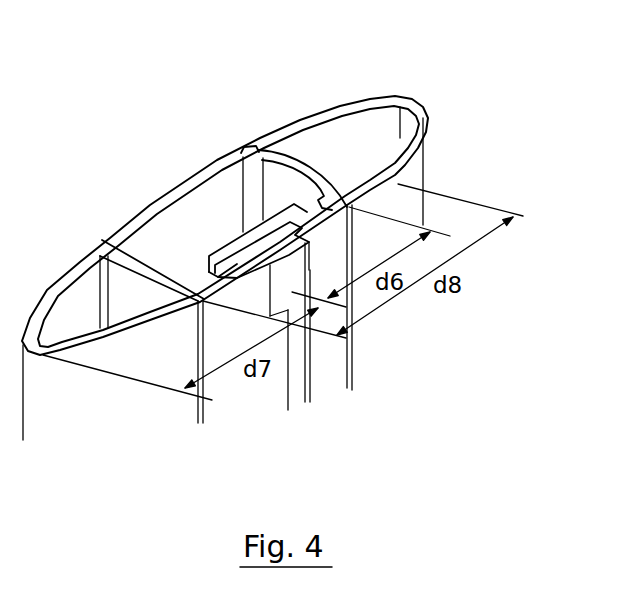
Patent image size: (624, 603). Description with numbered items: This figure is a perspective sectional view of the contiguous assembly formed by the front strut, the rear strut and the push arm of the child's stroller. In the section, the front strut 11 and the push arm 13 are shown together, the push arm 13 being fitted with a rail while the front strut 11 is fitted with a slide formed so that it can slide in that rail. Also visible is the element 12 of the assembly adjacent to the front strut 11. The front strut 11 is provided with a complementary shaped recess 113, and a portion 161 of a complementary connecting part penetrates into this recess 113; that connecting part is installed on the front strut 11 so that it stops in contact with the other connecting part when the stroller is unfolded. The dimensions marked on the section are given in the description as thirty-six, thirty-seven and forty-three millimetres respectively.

The front strut 11 is at (166, 196).
The first chamber 12 is at (65, 278).
The push arm 13 is at (330, 110).
The complementary shaped recess 113 is at (242, 243).
The portion of complementary connecting part 161 is at (398, 185).